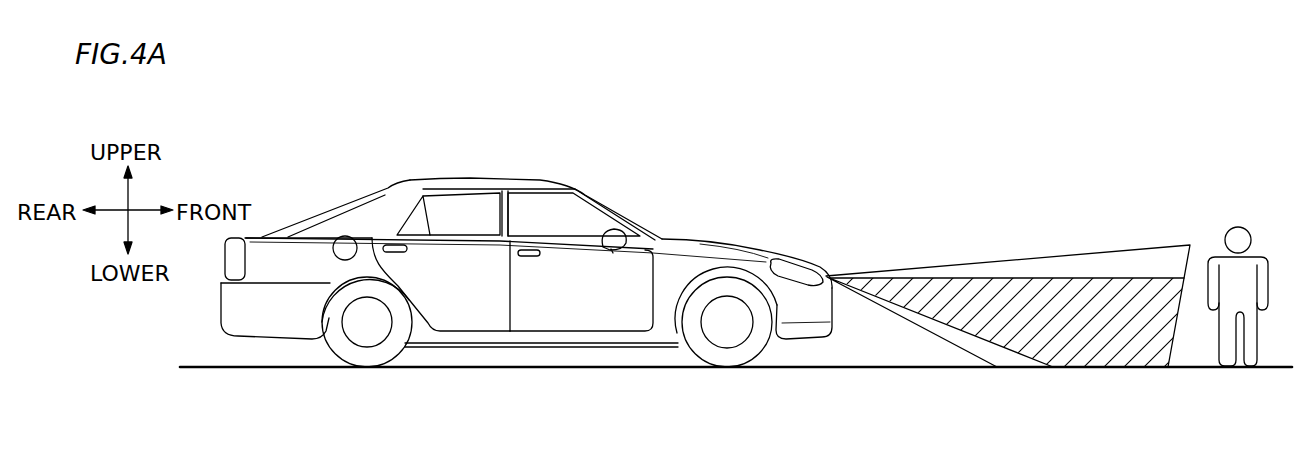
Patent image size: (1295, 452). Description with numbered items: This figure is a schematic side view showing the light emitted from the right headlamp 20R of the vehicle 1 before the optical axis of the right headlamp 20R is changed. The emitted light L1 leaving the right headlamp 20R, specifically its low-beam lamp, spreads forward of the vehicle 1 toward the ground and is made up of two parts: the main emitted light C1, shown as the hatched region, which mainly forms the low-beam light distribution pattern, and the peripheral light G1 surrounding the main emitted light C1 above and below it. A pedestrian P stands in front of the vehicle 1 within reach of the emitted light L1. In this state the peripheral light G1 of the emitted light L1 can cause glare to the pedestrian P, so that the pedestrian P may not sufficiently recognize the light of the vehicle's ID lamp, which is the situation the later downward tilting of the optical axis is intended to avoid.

The vehicle 1 is at (389, 173).
The right headlamp 20R is at (808, 270).
The emitted light L1 is at (912, 249).
The main emitted light C1 is at (975, 290).
The peripheral light G1 is at (1091, 263).
The pedestrian P is at (1244, 232).